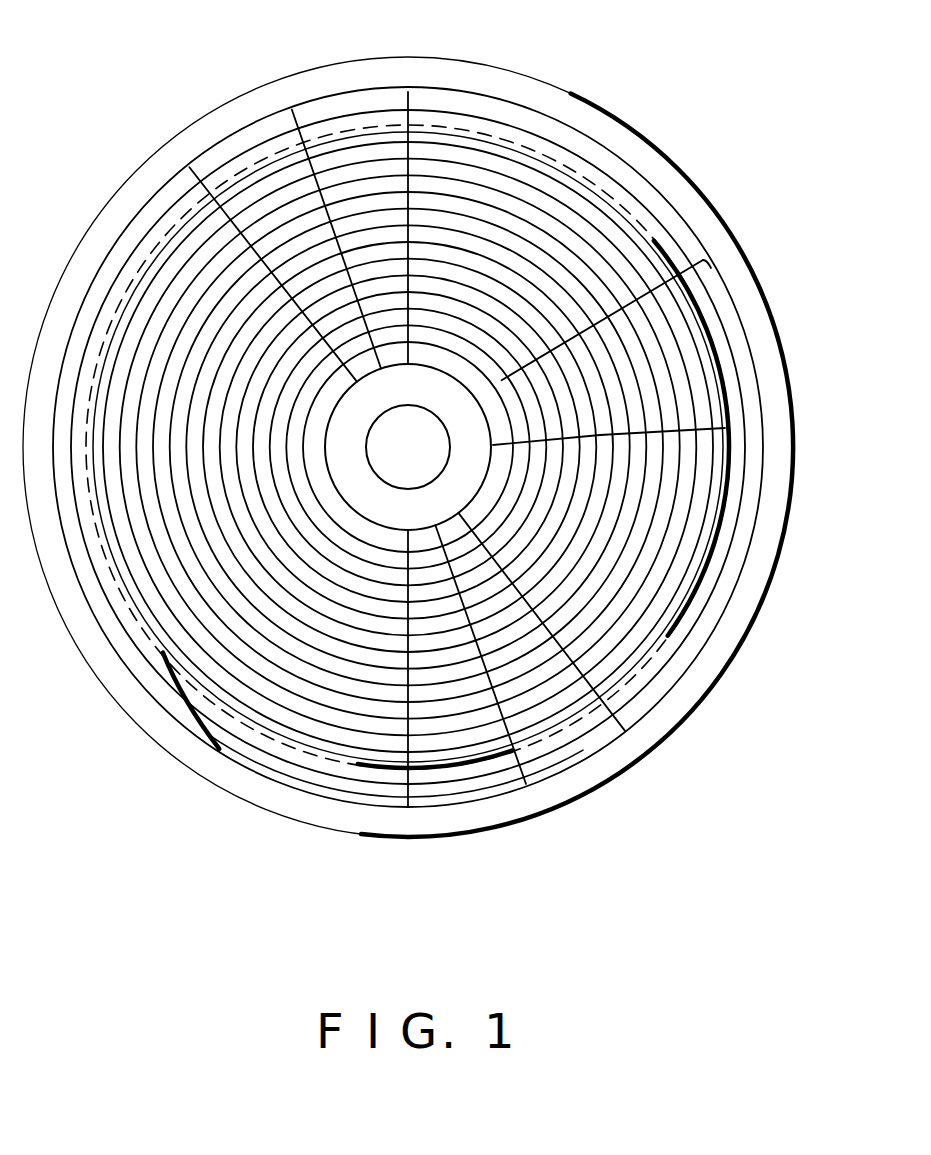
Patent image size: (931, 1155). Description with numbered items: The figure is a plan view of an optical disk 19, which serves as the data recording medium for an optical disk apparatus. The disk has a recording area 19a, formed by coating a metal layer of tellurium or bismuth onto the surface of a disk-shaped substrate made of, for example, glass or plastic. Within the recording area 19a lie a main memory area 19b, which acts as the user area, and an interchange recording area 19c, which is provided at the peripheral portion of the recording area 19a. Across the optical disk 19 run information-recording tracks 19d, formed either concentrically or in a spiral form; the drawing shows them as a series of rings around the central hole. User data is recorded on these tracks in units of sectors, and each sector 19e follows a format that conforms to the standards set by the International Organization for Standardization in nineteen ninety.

The optical disk 19 is at (571, 94).
The recording area 19a is at (476, 399).
The main memory area 19b is at (600, 435).
The interchange recording area 19c is at (707, 326).
The information-recording tracks 19d is at (707, 607).
The sector 19e is at (358, 108).